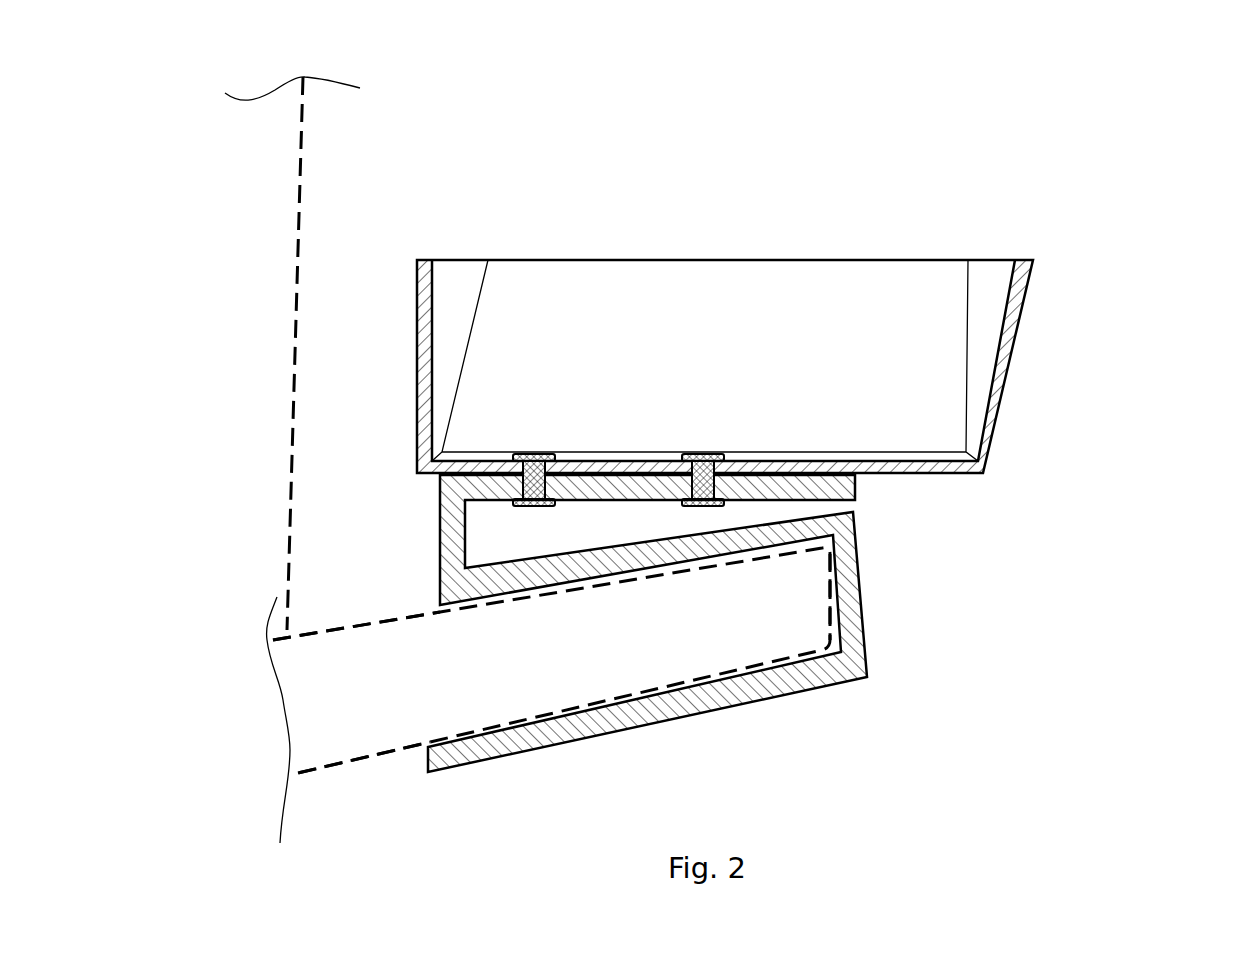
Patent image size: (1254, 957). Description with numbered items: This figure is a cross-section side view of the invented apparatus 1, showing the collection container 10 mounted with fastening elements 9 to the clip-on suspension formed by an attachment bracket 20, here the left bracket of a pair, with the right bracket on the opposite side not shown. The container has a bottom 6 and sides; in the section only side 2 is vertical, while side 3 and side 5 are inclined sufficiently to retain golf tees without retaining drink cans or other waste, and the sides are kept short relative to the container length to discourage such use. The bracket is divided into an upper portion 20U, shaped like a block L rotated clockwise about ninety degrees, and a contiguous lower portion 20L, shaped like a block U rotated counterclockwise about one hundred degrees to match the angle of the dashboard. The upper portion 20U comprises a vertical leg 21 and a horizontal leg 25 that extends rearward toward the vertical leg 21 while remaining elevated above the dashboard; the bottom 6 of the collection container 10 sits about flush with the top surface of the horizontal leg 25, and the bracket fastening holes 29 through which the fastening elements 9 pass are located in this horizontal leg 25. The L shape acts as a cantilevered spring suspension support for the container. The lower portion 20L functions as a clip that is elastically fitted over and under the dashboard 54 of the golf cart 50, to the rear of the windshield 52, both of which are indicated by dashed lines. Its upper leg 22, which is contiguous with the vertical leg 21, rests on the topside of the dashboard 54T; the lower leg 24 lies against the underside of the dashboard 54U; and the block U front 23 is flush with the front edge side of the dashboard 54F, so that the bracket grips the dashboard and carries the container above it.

The apparatus 1 is at (1068, 143).
The side 2 is at (406, 340).
The side 3 is at (1019, 356).
The side 5 is at (688, 252).
The bottom 6 is at (903, 441).
The fastening elements 9 is at (697, 442).
The collection container 10 is at (1137, 433).
The attachment bracket 20 is at (1054, 656).
The upper portion 20U is at (417, 495).
The lower portion 20L is at (847, 715).
The vertical leg 21 is at (442, 526).
The upper leg 22 is at (558, 562).
The block U front 23 is at (857, 568).
The lower leg 24 is at (646, 725).
The horizontal leg 25 is at (856, 496).
The bracket fastening holes 29 is at (676, 484).
The golf cart 50 is at (123, 237).
The windshield 52 is at (277, 402).
The dashboard 54 is at (538, 665).
The topside of the dashboard 54T is at (361, 611).
The underside of the dashboard 54U is at (385, 764).
The front edge side of the dashboard 54F is at (812, 598).